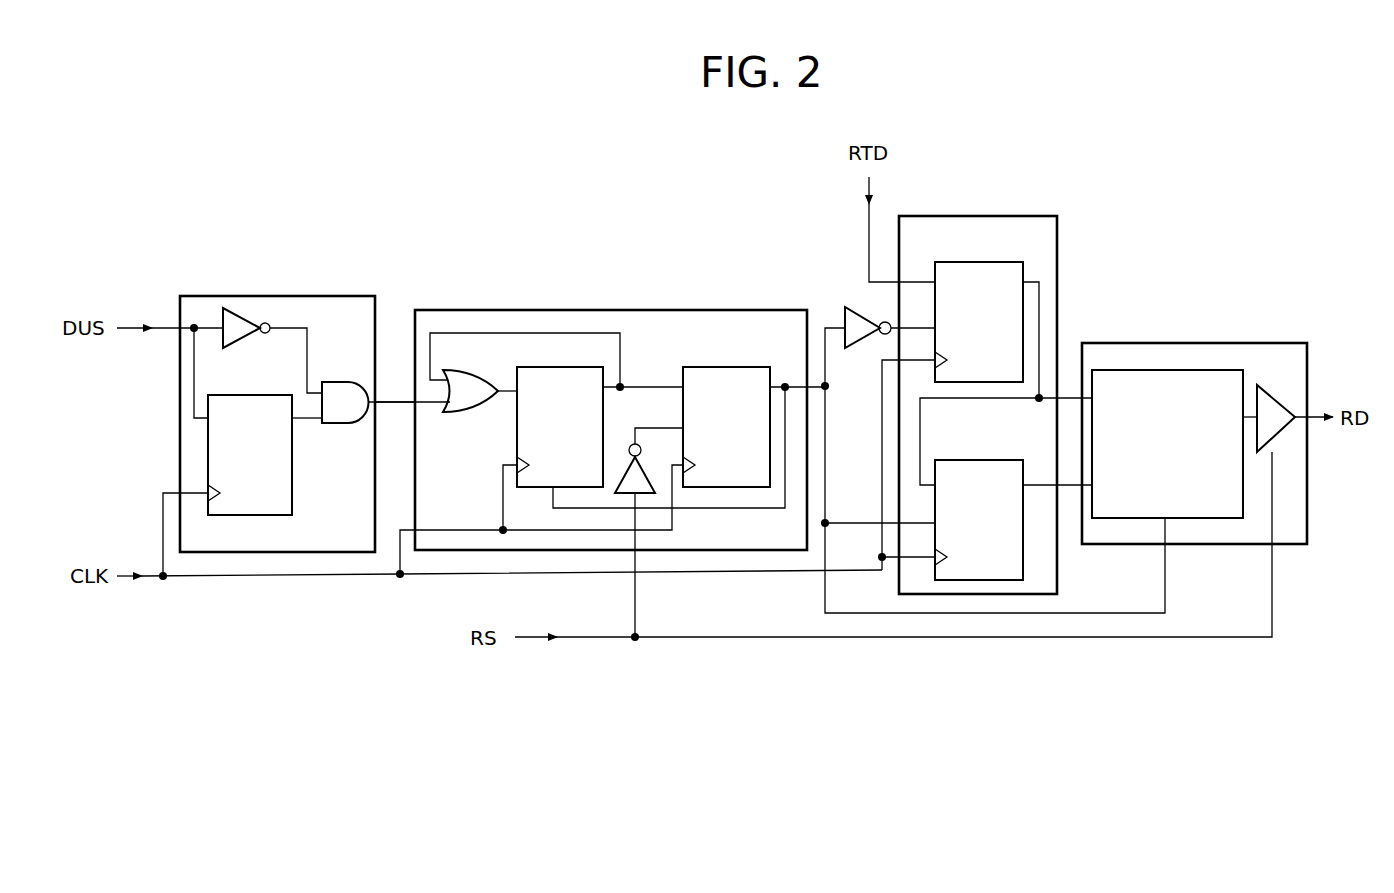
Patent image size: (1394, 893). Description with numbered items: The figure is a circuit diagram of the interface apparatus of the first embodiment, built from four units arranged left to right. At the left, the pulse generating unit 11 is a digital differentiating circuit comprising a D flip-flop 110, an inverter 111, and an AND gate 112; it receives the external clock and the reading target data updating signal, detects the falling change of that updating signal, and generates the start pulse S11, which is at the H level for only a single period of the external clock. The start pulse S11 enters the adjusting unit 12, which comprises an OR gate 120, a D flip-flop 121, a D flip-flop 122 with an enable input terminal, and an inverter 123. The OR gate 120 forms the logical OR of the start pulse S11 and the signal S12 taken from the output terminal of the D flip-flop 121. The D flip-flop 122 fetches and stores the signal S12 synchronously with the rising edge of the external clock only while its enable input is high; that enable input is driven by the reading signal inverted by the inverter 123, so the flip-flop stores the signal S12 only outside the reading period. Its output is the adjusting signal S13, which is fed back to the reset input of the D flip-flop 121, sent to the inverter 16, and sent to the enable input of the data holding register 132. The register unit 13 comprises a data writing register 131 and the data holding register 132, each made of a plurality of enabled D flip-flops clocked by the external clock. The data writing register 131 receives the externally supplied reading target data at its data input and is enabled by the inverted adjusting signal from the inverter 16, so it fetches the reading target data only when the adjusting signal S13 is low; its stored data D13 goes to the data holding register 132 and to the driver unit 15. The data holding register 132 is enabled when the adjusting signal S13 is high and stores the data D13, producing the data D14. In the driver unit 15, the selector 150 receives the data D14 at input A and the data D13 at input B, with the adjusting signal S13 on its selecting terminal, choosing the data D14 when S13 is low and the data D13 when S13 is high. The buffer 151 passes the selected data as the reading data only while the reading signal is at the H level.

The pulse generating unit 11 is at (347, 296).
The D flip-flop 110 is at (293, 478).
The inverter 111 is at (240, 308).
The AND gate 112 is at (336, 382).
The adjusting unit 12 is at (789, 310).
The OR gate 120 is at (468, 368).
The D flip-flop 121 is at (560, 367).
The D flip-flop with enable input terminal 122 is at (735, 367).
The inverter 123 is at (623, 495).
The register unit 13 is at (1022, 216).
The data writing register 131 is at (949, 260).
The data holding register 132 is at (982, 582).
The inverter 16 is at (860, 352).
The driver unit 15 is at (1175, 343).
The selector 150 is at (1125, 370).
The buffer 151 is at (1266, 385).
The start pulse S11 is at (397, 400).
The signal S12 is at (650, 385).
The adjusting signal S13 is at (866, 615).
The data D13 is at (1032, 278).
The data D14 is at (1040, 485).